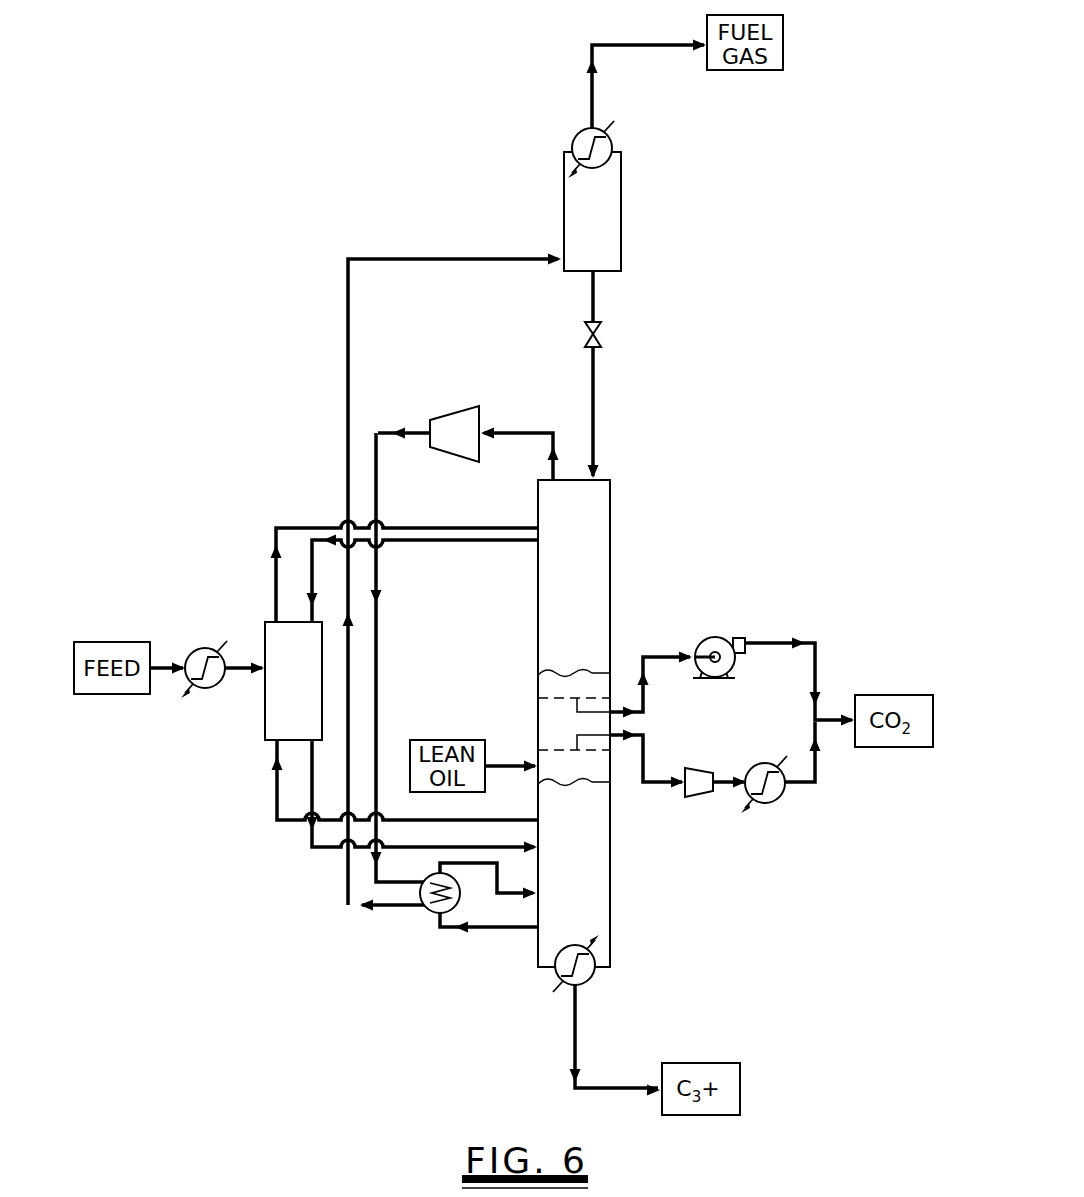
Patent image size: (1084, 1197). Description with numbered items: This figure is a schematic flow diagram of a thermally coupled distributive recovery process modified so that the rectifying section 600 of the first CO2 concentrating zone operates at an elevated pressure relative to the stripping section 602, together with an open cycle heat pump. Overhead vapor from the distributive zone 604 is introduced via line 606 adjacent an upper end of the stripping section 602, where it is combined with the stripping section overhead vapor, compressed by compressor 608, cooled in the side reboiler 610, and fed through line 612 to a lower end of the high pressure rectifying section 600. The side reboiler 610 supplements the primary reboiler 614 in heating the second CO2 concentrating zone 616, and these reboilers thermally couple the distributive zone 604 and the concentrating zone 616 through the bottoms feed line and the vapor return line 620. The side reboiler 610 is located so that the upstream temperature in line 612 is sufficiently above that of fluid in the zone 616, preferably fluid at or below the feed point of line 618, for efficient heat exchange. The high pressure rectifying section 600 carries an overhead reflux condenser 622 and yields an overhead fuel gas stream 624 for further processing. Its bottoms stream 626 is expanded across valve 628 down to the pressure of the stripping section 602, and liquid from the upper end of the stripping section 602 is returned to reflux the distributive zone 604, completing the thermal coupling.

The rectifying section 600 is at (618, 208).
The stripping section 602 is at (583, 590).
The distributive zone 604 is at (278, 640).
The line 606 is at (305, 528).
The compressor 608 is at (462, 417).
The side reboiler 610 is at (432, 912).
The line 612 is at (440, 258).
The primary reboiler 614 is at (580, 987).
The second CO2 concentrating zone 616 is at (580, 883).
The feed line 618 is at (327, 848).
The vapor return line 620 is at (410, 822).
The overhead reflux condenser 622 is at (574, 146).
The overhead fuel gas stream 624 is at (660, 43).
The bottoms stream 626 is at (596, 312).
The valve 628 is at (600, 340).